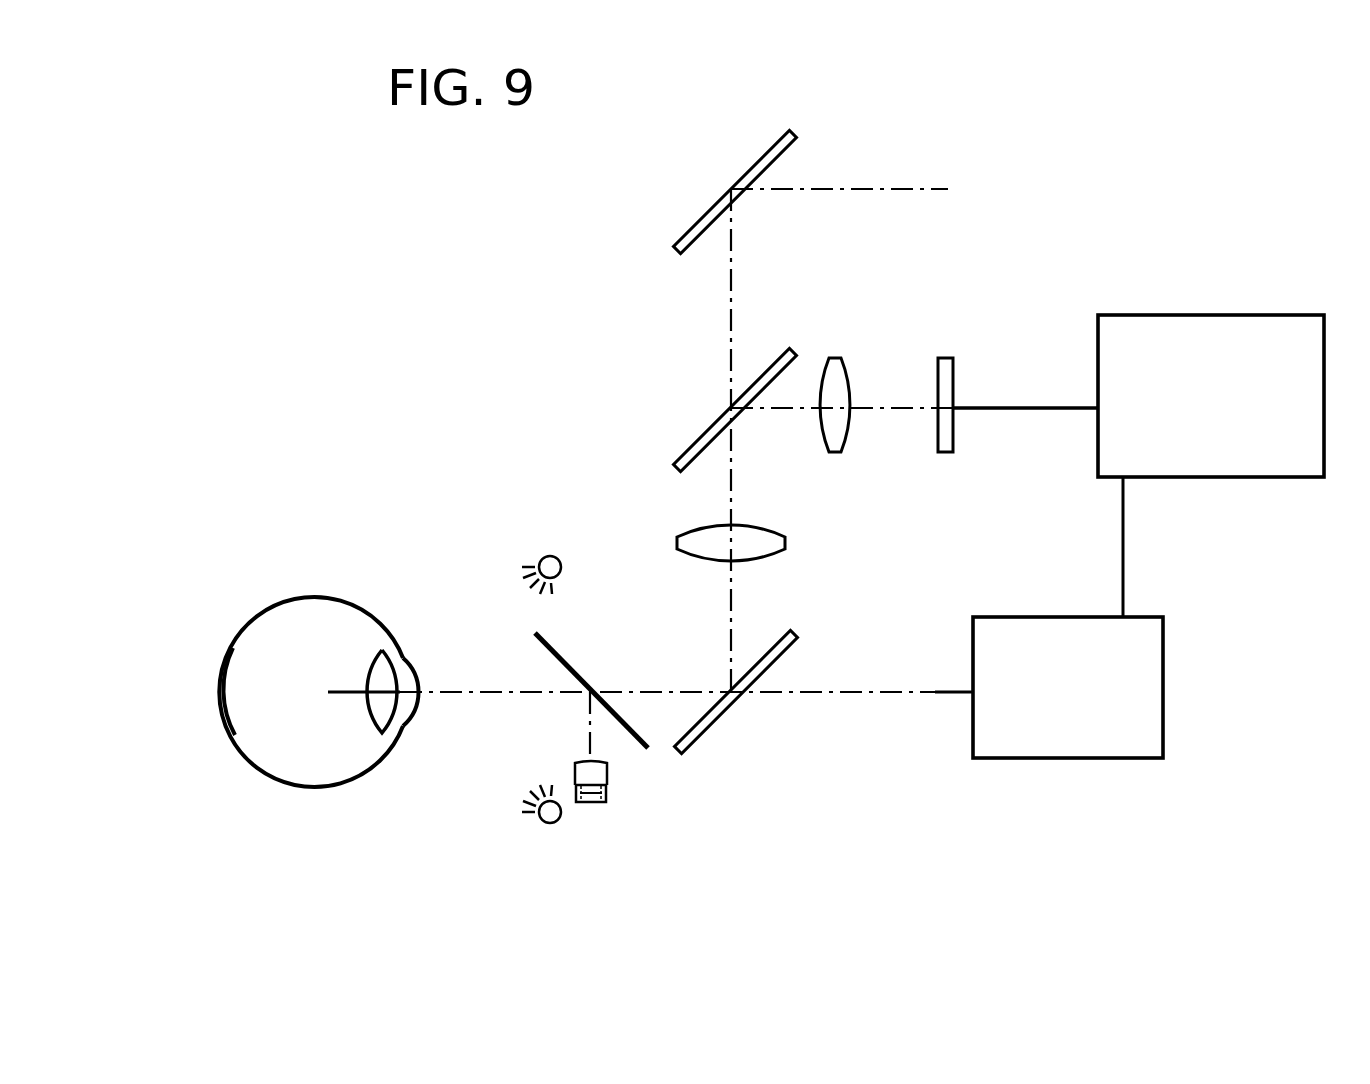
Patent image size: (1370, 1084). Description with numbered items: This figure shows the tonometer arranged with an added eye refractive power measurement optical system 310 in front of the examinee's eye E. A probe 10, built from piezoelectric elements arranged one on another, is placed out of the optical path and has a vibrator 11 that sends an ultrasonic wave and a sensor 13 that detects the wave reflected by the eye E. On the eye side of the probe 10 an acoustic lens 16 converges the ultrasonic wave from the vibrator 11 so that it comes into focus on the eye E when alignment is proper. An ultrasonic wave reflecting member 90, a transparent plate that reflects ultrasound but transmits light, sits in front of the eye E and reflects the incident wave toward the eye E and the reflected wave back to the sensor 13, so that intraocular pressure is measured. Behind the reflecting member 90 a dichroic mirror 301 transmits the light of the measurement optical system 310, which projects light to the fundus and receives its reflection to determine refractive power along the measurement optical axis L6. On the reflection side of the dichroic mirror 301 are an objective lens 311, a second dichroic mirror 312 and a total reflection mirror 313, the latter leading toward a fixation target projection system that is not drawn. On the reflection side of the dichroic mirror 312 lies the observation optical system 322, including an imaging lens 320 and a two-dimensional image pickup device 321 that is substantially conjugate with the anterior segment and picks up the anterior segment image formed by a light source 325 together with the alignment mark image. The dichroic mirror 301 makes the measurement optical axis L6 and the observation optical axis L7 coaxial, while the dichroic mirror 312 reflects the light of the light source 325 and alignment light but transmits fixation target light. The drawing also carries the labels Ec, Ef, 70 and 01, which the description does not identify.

The examinee's eye E is at (258, 610).
The cornea Ec is at (405, 660).
The fundus Ef is at (225, 730).
The ultrasonic wave reflecting member 90 is at (590, 690).
The dichroic mirror 301 is at (795, 633).
The objective lens 311 is at (760, 545).
The dichroic mirror 312 is at (720, 425).
The total reflection mirror 313 is at (712, 208).
The imaging lens 320 is at (833, 358).
The two-dimensional image pickup device 321 is at (938, 358).
The observation optical system 322 is at (990, 348).
The light receiving element unit 70 is at (1097, 462).
The eye refractive power measurement optical system 310 is at (1030, 758).
The light source 325 is at (553, 556).
The acoustic lens 16 is at (588, 772).
The vibrator 11 is at (600, 800).
The sensor 13 is at (592, 802).
The probe 10 is at (690, 838).
The measurement optical axis L6 is at (845, 692).
The optical axis of the observation optical system L7 is at (860, 408).
The optical axis 01 is at (932, 692).